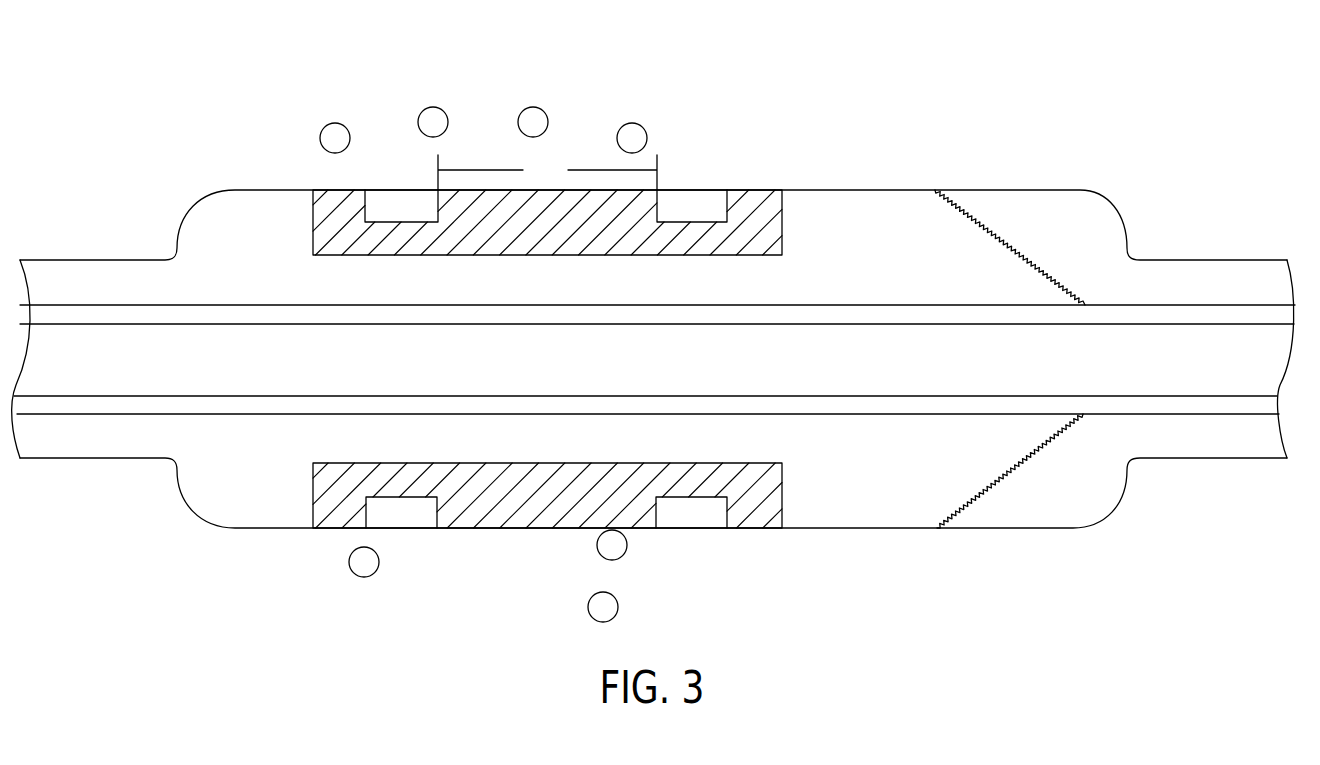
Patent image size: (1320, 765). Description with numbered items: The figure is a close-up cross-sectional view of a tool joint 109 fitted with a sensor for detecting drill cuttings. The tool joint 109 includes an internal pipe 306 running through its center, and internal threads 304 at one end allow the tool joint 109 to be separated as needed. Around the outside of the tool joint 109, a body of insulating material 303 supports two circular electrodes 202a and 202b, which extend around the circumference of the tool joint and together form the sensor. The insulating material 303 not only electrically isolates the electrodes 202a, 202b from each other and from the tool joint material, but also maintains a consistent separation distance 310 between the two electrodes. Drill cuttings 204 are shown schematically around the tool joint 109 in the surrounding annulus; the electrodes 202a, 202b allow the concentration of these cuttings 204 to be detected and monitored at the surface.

The tool joint 109 is at (1148, 131).
The electrode 202a is at (397, 200).
The electrode 202b is at (690, 200).
The drill cuttings 204 is at (532, 106).
The insulating material 303 is at (335, 530).
The internal threads 304 is at (1000, 237).
The internal pipe 306 is at (225, 417).
The separation distance 310 is at (547, 171).